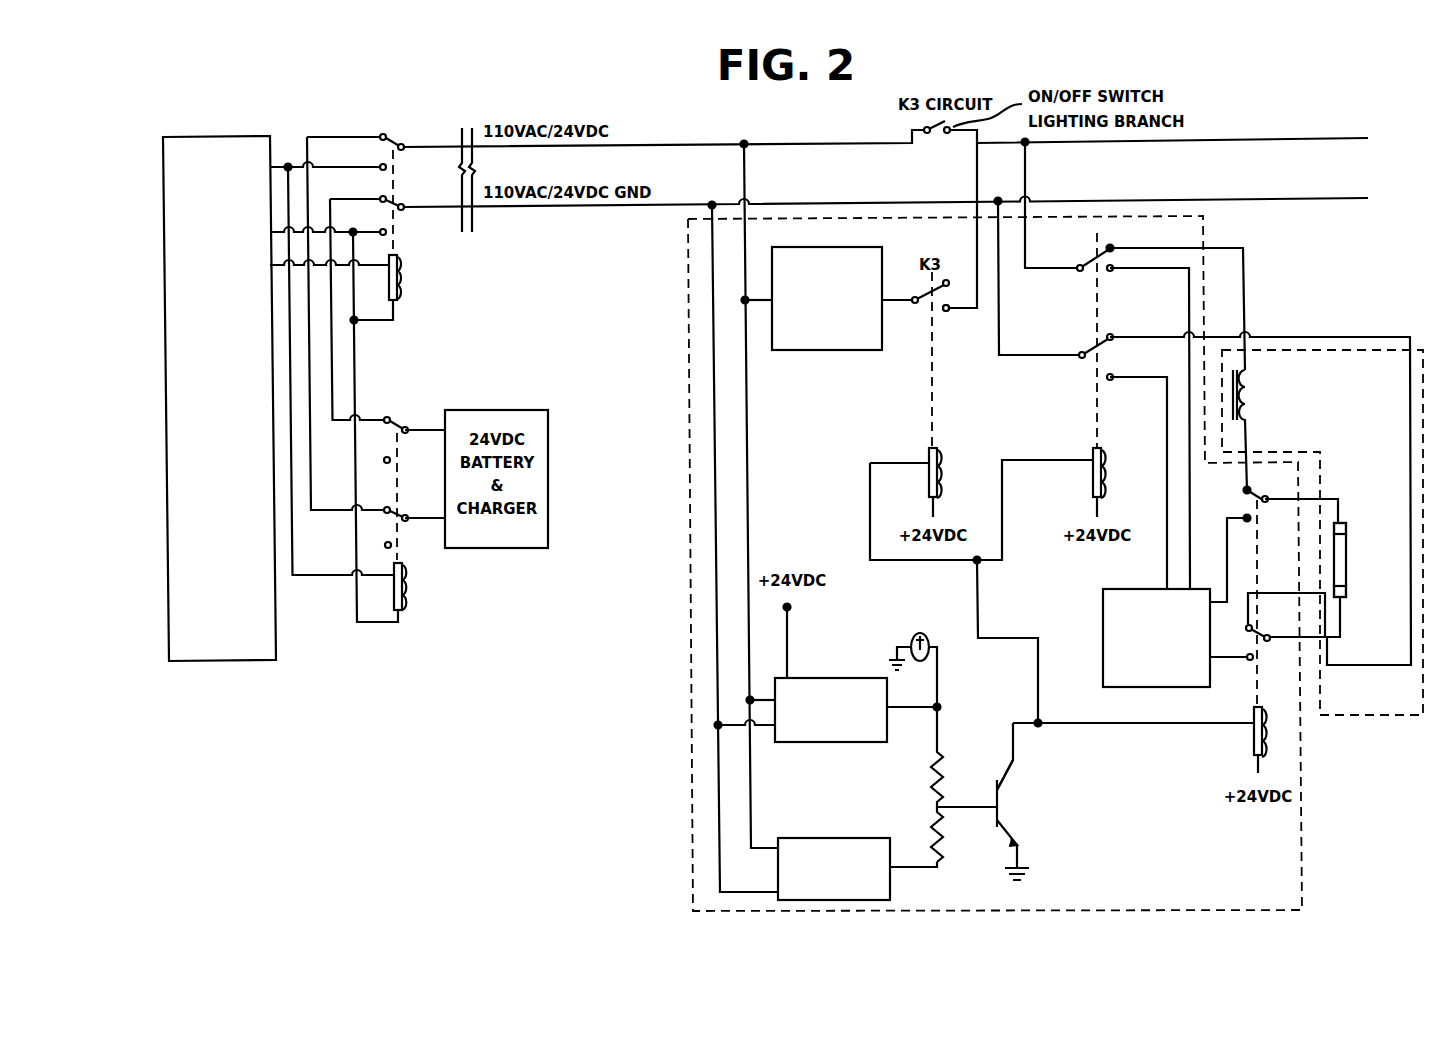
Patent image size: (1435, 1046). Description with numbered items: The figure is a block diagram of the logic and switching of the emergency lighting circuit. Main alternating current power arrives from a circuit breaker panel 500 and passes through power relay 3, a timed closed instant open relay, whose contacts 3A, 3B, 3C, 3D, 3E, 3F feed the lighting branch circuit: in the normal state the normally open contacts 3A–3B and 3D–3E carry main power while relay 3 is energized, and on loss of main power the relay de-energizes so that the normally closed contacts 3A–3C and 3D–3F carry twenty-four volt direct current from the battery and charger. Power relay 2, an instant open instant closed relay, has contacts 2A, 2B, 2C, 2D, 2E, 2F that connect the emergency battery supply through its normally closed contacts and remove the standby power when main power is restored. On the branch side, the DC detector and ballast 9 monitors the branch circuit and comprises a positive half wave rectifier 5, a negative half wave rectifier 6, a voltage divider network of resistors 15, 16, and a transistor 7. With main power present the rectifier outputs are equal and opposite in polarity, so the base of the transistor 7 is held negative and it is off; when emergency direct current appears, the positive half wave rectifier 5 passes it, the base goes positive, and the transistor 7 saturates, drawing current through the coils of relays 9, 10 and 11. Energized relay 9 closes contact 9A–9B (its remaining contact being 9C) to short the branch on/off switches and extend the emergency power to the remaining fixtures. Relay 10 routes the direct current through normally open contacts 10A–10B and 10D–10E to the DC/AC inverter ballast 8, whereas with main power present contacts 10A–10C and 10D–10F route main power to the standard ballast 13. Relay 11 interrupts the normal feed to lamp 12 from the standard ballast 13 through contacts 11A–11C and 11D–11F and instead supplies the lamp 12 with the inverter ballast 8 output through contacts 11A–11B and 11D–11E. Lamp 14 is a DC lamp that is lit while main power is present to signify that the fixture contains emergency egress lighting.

The circuit breaker panel 500 is at (210, 625).
The power relay 2 is at (402, 610).
The relay contact 2A is at (412, 510).
The relay contact 2B is at (377, 537).
The relay contact 2C is at (377, 501).
The relay contact 2D is at (410, 420).
The relay contact 2E is at (377, 450).
The relay contact 2F is at (377, 411).
The power relay 3 is at (397, 300).
The relay contact 3A is at (409, 198).
The relay contact 3B is at (373, 223).
The relay contact 3C is at (373, 190).
The relay contact 3D is at (406, 138).
The relay contact 3E is at (374, 158).
The relay contact 3F is at (374, 128).
The positive half wave rectifier 5 is at (865, 678).
The negative half wave rectifier 6 is at (865, 838).
The transistor 7 is at (993, 790).
The DC/AC inverter ballast circuit 8 is at (1103, 622).
The DC detector and ballast 9 is at (795, 350).
The relay contact 9A is at (905, 293).
The relay contact 9B is at (956, 322).
The relay 9 contact 9C is at (958, 276).
The relay 10 is at (1101, 488).
The relay contact 10A is at (1068, 346).
The relay contact 10B is at (1125, 388).
The relay contact 10C is at (1125, 328).
The relay contact 10D is at (1067, 258).
The relay contact 10E is at (1125, 281).
The relay contact 10F is at (1125, 240).
The relay 11 is at (1254, 745).
The relay contact 11A is at (1286, 617).
The relay contact 11B is at (1232, 649).
The relay contact 11C is at (1232, 618).
The relay contact 11D is at (1277, 490).
The relay contact 11E is at (1231, 509).
The relay contact 11F is at (1231, 483).
The light fixture lamp 12 is at (1346, 572).
The standard ballast 13 is at (1249, 400).
The lamp 14 is at (913, 636).
The resistor 15 is at (930, 766).
The resistor 16 is at (930, 842).